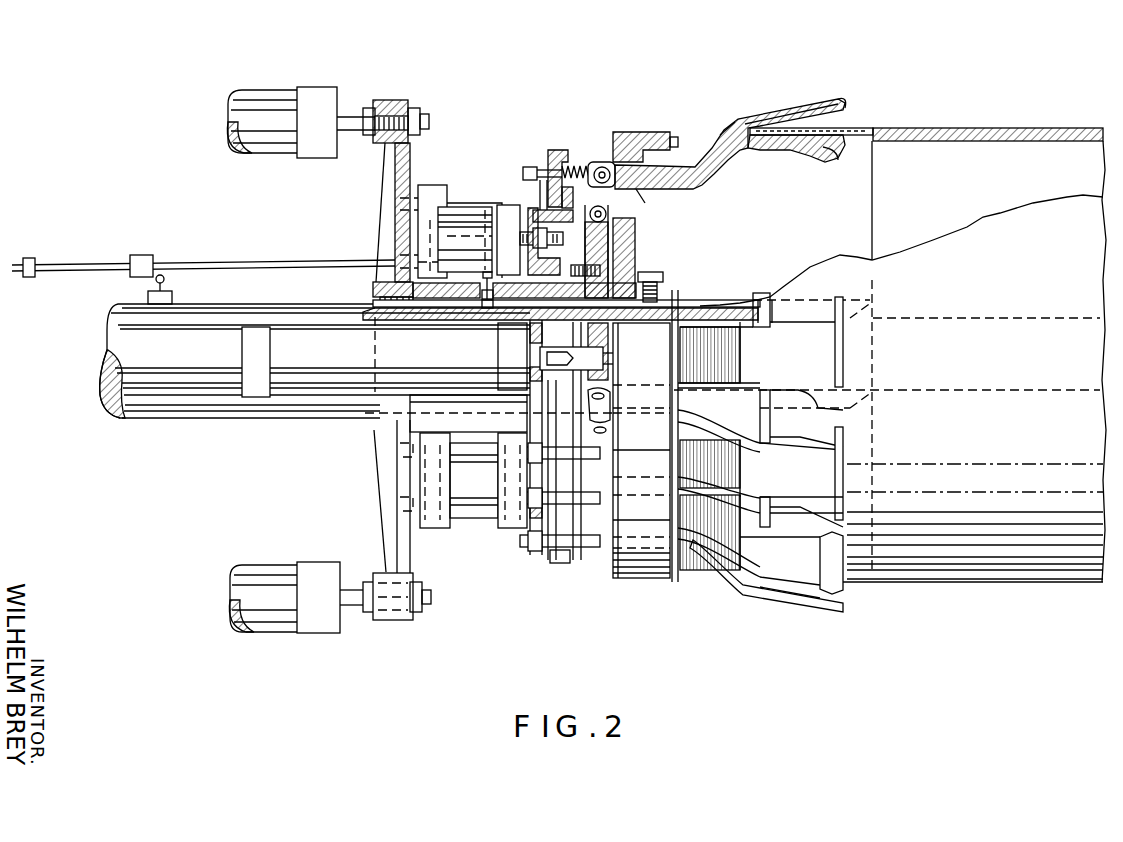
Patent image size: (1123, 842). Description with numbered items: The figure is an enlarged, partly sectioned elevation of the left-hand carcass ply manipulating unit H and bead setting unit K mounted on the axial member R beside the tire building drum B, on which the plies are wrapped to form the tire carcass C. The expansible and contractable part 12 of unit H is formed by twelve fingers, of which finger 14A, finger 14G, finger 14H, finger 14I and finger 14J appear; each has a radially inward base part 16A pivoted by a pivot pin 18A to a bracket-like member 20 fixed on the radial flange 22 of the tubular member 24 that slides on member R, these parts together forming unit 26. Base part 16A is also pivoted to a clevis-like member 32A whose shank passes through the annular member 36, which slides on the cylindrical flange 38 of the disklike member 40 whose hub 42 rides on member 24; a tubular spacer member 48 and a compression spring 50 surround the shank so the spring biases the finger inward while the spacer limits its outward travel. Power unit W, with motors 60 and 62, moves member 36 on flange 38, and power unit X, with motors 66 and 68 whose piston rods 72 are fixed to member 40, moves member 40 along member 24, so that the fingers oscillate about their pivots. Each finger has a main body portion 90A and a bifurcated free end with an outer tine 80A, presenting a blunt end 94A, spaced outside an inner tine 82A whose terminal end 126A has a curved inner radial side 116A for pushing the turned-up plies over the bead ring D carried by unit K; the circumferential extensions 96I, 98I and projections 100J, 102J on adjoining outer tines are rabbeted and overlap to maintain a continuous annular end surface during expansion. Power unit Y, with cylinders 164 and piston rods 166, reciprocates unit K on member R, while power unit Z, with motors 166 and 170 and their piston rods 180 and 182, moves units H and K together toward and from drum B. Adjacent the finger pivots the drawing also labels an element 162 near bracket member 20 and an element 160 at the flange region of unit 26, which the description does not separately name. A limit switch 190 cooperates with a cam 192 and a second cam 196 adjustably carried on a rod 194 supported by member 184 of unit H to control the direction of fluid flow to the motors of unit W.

The power unit Z is at (269, 80).
The motor 166 is at (280, 158).
The piston rod 180 is at (346, 117).
The member 184 is at (388, 197).
The rod 194 is at (273, 262).
The second cam 196 is at (29, 258).
The cam 192 is at (140, 256).
The limit switch 190 is at (172, 297).
The member R is at (94, 393).
The power unit Y is at (288, 398).
The cylinder 164 is at (320, 361).
The unit 26 is at (452, 320).
The power unit W is at (438, 183).
The motor 60 is at (470, 203).
The motor 66 is at (474, 244).
The power unit X is at (460, 216).
The disklike member 40 is at (529, 235).
The cylindrical flange 38 is at (543, 203).
The piston rod 72 is at (529, 254).
The tubular member 24 is at (482, 292).
The hub 42 is at (555, 285).
The annular member 36 is at (556, 150).
The compression spring 50 is at (569, 164).
The tubular spacer member 48 is at (571, 199).
The headed or clevice-like member 32A is at (592, 162).
The bead setting unit K is at (651, 132).
The bead ring D is at (690, 137).
The finger 14A is at (722, 165).
The outer tine 80A is at (775, 118).
The main body portion 90A is at (732, 120).
The blunt or planar end 94A is at (846, 106).
The end of tine 126A is at (853, 129).
The inner tine 82A is at (778, 152).
The curved inner radial side 116A is at (825, 156).
The tire carcass C is at (988, 128).
The tire building drum B is at (998, 143).
The pivot pin 18A is at (606, 212).
The base part 16A is at (636, 190).
The radial flange 22 is at (588, 253).
The bracket-like member 20 is at (636, 245).
The adjusting screw 162 is at (633, 224).
The carcass ply manipulating unit H is at (577, 562).
The flange 160 is at (626, 584).
The motor 68 is at (482, 448).
The motor 62 is at (487, 520).
The motor 170 is at (287, 565).
The piston rod 182 is at (346, 606).
The expansible and contractable part 12 is at (826, 608).
The finger 14J is at (774, 361).
The circumferential projection 102J is at (820, 300).
The circumferential projection 100J is at (826, 410).
The circumferential extension 98I is at (836, 432).
The finger 14I is at (779, 489).
The circumferential extension 96I is at (838, 534).
The finger 14H is at (779, 569).
The finger 14G is at (752, 592).